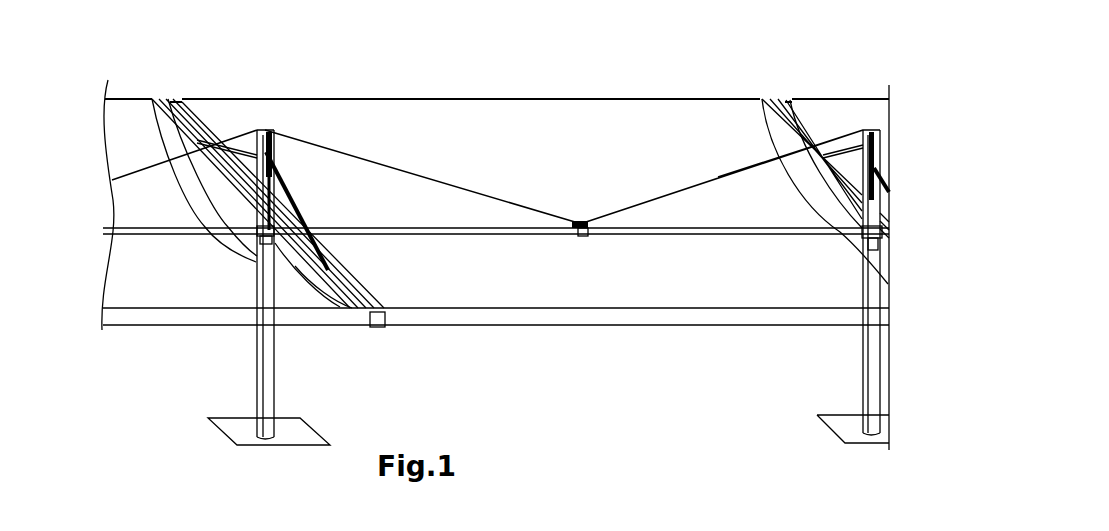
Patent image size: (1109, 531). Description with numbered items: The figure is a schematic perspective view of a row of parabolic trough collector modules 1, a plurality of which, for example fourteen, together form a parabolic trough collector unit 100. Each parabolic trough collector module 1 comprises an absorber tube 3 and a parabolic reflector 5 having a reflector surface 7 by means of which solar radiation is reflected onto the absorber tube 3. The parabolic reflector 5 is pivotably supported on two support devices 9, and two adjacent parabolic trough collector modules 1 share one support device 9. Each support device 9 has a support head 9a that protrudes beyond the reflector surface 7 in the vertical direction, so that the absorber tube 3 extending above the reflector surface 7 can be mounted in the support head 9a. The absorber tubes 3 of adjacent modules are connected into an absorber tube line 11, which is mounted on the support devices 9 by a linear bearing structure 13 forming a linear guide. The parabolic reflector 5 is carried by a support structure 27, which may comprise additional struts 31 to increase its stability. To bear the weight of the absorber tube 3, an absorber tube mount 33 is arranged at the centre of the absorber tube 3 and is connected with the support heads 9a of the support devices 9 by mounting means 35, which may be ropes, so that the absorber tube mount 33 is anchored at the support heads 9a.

The parabolic trough collector unit 100 is at (822, 73).
The parabolic trough collector module 1 is at (140, 82).
The absorber tube 3 is at (118, 229).
The parabolic reflector 5 is at (534, 98).
The reflector surface 7 is at (556, 165).
The support device 9 is at (265, 122).
The support head 9a is at (270, 157).
The absorber tube line 11 is at (185, 262).
The linear bearing structure 13 is at (250, 253).
The support structure 27 is at (180, 88).
The strut 31 is at (297, 206).
The absorber tube mount 33 is at (585, 210).
The mounting means 35 is at (380, 168).